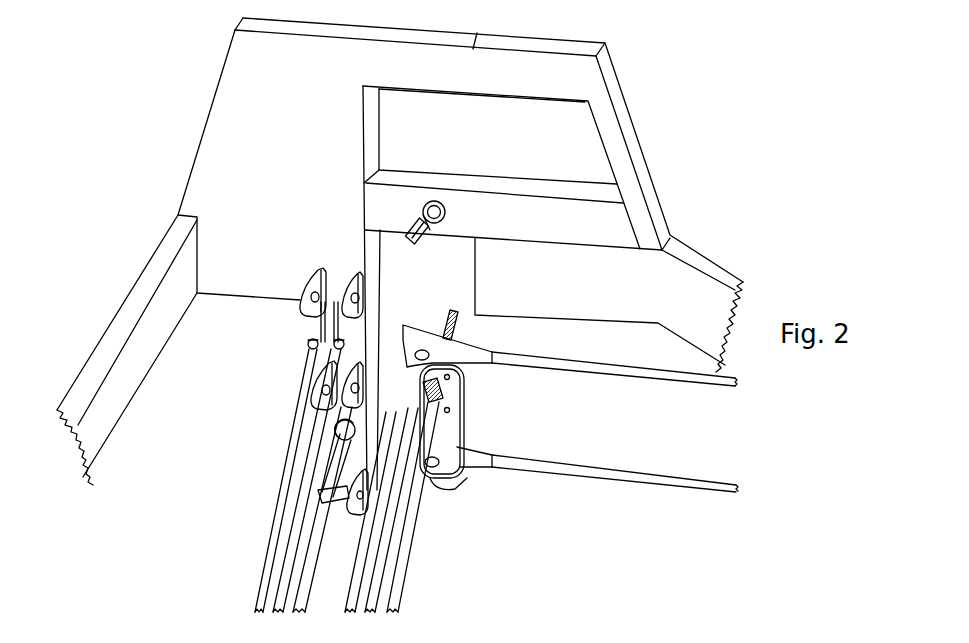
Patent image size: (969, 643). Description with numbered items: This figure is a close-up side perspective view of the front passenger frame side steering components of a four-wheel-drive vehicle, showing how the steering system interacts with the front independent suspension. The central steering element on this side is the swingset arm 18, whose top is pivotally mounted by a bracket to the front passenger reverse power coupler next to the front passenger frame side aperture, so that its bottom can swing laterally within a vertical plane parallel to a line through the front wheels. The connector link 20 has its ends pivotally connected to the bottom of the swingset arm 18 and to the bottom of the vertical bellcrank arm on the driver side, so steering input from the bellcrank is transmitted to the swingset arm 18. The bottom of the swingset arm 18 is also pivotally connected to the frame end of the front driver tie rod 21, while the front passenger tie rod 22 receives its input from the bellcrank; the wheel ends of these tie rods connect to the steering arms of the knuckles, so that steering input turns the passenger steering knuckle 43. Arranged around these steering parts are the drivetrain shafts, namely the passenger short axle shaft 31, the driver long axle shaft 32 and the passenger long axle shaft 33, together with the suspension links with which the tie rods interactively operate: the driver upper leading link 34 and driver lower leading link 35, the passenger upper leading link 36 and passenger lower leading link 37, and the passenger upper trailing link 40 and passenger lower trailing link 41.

The swingset arm 18 is at (322, 321).
The connector link 20 is at (297, 422).
The front driver tie rod 21 is at (312, 402).
The front passenger tie rod 22 is at (453, 425).
The passenger short axle shaft 31 is at (425, 240).
The driver long axle shaft 32 is at (297, 548).
The passenger long axle shaft 33 is at (397, 513).
The driver upper leading link 34 is at (312, 471).
The driver lower leading link 35 is at (303, 583).
The passenger upper leading link 36 is at (428, 499).
The passenger lower leading link 37 is at (410, 568).
The passenger upper trailing link 40 is at (693, 388).
The passenger lower trailing link 41 is at (582, 466).
The passenger steering knuckle 43 is at (468, 365).